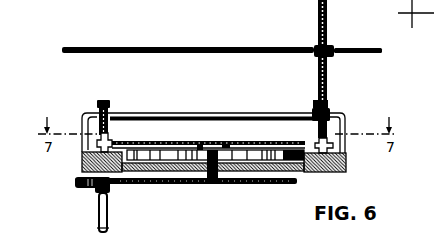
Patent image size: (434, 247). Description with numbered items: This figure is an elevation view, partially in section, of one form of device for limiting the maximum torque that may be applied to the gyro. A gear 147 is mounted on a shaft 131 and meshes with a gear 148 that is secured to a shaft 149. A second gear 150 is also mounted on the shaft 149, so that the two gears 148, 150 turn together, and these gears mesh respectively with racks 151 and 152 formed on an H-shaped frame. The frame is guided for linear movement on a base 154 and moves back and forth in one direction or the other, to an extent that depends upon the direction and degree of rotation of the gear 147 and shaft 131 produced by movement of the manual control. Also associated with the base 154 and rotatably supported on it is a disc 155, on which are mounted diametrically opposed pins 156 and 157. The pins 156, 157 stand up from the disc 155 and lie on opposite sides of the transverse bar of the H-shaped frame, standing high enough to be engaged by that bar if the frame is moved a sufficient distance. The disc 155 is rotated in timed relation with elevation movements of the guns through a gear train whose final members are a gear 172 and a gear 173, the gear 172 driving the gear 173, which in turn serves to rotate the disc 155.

The shaft 131 is at (216, 54).
The gear 147 is at (328, 79).
The gear 148 is at (331, 108).
The shaft 149 is at (213, 113).
The second gear 150 is at (110, 106).
The rack 151 is at (313, 140).
The rack 152 is at (109, 137).
The base 154 is at (347, 168).
The disc 155 is at (306, 172).
The pin 156 is at (229, 127).
The pin 157 is at (199, 145).
The gear 172 is at (74, 182).
The gear 173 is at (162, 184).